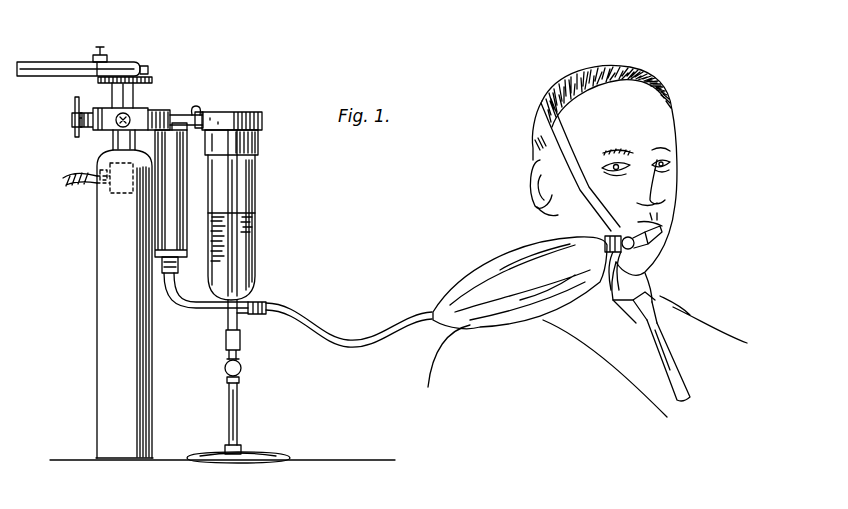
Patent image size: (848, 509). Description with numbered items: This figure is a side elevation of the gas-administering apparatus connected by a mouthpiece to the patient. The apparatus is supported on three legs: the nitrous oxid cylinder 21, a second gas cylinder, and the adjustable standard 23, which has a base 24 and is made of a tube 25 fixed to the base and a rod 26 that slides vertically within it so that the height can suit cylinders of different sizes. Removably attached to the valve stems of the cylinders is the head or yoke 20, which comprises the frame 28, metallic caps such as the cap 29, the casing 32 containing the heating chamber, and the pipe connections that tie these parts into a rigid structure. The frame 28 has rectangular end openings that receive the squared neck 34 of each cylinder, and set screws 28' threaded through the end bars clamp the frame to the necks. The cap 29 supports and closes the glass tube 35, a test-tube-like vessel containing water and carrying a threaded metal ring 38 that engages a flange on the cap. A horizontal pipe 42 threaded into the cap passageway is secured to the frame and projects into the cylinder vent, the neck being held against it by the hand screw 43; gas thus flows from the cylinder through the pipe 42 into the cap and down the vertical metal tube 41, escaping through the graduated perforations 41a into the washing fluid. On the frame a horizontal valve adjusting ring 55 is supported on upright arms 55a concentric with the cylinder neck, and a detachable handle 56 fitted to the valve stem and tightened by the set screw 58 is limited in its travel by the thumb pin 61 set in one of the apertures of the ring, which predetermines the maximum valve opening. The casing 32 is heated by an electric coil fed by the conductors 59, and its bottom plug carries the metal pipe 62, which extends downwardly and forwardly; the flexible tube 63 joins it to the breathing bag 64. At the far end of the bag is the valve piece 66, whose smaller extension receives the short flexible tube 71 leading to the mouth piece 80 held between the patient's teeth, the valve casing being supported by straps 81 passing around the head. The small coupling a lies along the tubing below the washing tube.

The head or yoke 20 is at (201, 109).
The nitrous oxid cylinder 21 is at (97, 305).
The adjustable standard 23 is at (249, 363).
The base 24 is at (257, 456).
The tube 25 is at (240, 400).
The rod 26 is at (226, 338).
The frame 28 is at (101, 122).
The set screw 28' is at (69, 154).
The metallic cap 29 is at (257, 112).
The casing 32 is at (161, 204).
The squared neck 34 is at (122, 137).
The glass tube 35 is at (256, 172).
The threaded metal ring 38 is at (259, 138).
The vertical metal tube 41 is at (238, 203).
The perforations 41a is at (238, 236).
The horizontal pipe 42 is at (211, 105).
The hand screw 43 is at (72, 120).
The valve adjusting ring 55 is at (151, 78).
The upright arms 55a is at (114, 100).
The detachable handle 56 is at (50, 62).
The set screw 58 is at (146, 62).
The conductors 59 is at (68, 178).
The thumb pin 61 is at (102, 47).
The metal pipe 62 is at (188, 309).
The flexible tube 63 is at (317, 330).
The breathing bag 64 is at (470, 282).
The valve piece 66 is at (597, 243).
The short flexible tube 71 is at (649, 250).
The mouth piece 80 is at (661, 233).
The straps 81 is at (565, 152).
The coupling a is at (228, 320).